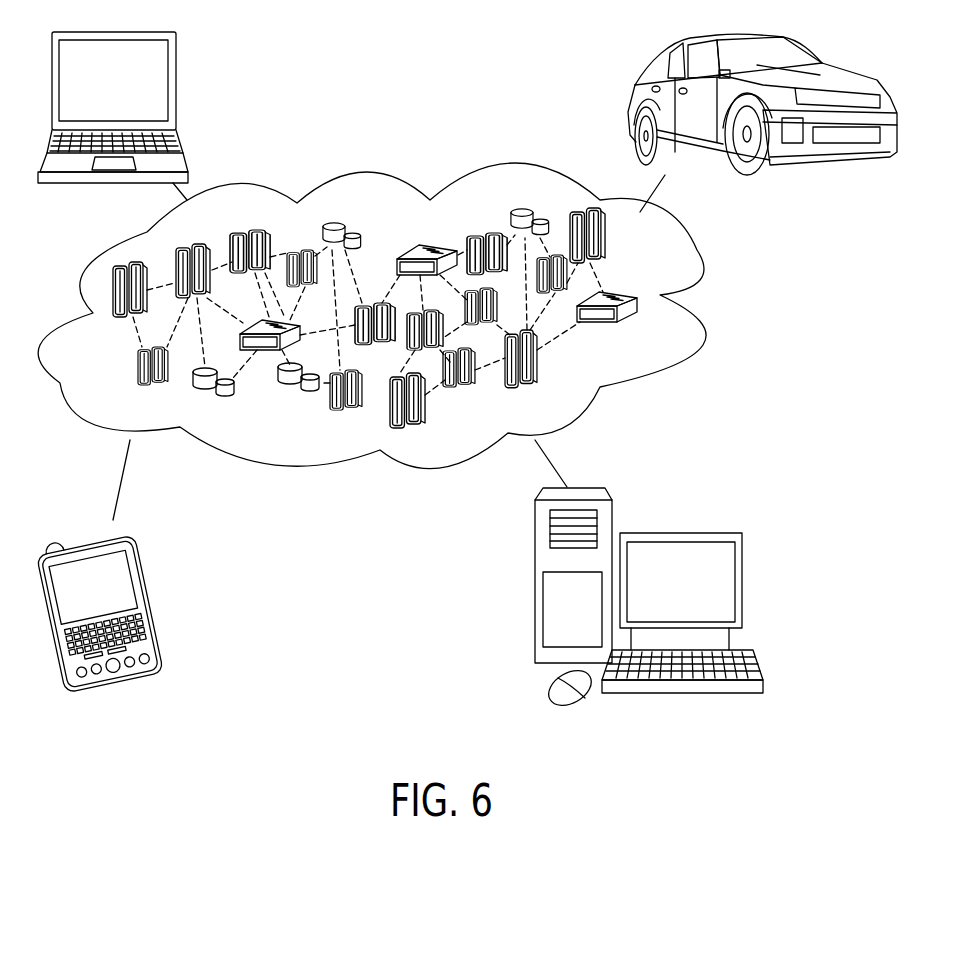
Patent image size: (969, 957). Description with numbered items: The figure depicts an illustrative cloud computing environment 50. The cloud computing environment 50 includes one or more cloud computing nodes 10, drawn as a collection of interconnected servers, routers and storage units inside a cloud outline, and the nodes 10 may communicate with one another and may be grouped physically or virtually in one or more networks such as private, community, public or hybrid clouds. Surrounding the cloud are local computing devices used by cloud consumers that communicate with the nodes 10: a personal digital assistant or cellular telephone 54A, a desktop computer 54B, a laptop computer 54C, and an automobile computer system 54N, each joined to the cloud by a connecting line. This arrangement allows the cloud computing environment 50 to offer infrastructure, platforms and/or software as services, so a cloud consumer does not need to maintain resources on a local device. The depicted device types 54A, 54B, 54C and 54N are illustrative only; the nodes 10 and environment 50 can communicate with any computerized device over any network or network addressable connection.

The cloud computing node 10 is at (652, 343).
The cloud computing environment 50 is at (697, 245).
The personal digital assistant or cellular telephone 54A is at (147, 580).
The desktop computer 54B is at (742, 578).
The laptop computer 54C is at (177, 86).
The automobile computer system 54N is at (807, 52).